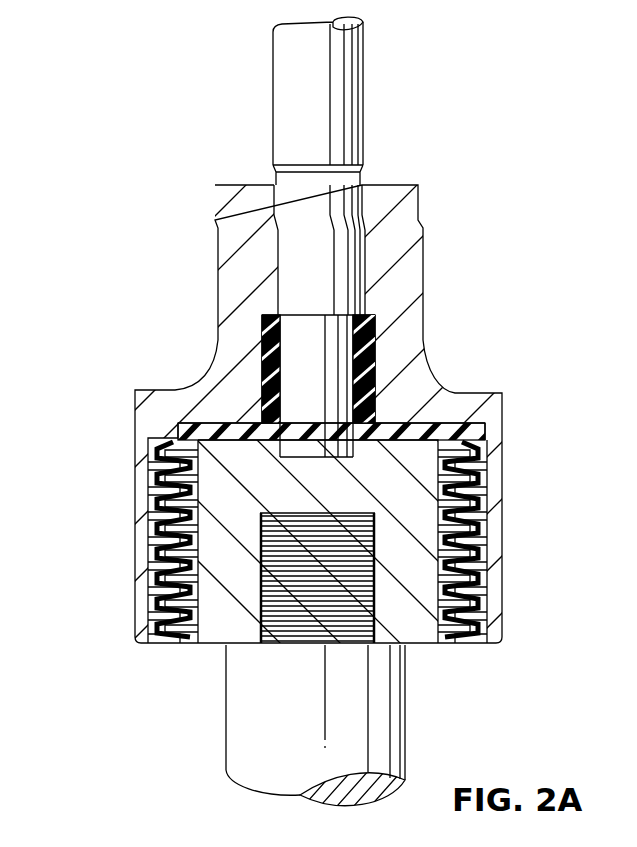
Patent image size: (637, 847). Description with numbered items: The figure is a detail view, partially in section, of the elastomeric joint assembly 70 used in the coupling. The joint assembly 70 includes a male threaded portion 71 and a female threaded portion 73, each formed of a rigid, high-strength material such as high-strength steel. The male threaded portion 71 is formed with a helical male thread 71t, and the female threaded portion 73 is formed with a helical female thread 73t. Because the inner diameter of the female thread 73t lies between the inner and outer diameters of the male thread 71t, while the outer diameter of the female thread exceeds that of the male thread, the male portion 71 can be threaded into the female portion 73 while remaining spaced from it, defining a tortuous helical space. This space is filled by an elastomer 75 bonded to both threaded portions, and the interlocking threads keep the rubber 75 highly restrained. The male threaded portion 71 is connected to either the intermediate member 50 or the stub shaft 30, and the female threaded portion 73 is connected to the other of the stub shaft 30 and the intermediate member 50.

The stub shaft 30 is at (352, 117).
The elastomeric joint assembly 70 is at (505, 380).
The female threaded portion 73 is at (411, 315).
The helical female thread 73t is at (165, 478).
The elastomer 75 is at (485, 556).
The male threaded portion 71 is at (418, 630).
The helical male thread 71t is at (180, 612).
The intermediate member 50 is at (287, 735).